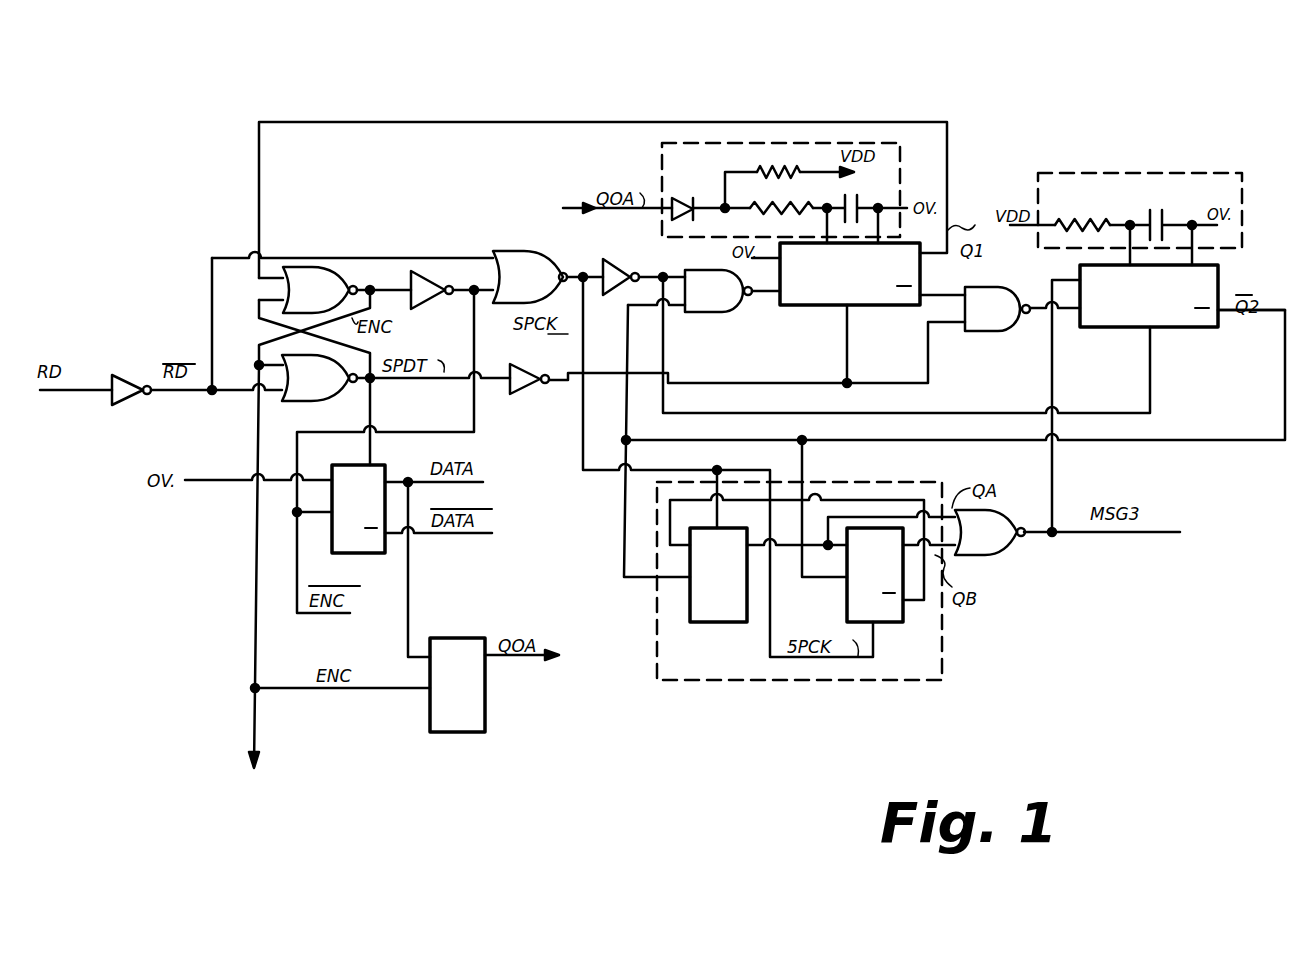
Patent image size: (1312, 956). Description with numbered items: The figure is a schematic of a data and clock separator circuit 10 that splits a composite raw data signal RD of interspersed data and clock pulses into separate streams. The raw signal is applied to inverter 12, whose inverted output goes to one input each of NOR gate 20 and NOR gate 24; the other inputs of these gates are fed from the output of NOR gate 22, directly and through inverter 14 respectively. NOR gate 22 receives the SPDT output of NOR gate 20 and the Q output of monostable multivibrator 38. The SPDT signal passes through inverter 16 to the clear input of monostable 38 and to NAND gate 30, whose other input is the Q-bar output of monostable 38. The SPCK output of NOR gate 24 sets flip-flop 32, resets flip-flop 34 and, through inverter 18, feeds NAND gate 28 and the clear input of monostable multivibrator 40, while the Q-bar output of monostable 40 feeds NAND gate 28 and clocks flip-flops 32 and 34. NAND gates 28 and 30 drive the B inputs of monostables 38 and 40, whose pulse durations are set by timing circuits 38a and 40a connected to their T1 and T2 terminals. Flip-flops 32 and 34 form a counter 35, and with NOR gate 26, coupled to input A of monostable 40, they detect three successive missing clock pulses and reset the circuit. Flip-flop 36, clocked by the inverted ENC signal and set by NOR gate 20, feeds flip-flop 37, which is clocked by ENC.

The data and clock separator circuit 10 is at (183, 128).
The inverter 12 is at (128, 378).
The inverter 14 is at (418, 280).
The inverter 16 is at (518, 386).
The inverter 18 is at (615, 297).
The NOR gate 20 is at (310, 382).
The NOR gate 22 is at (303, 280).
The NOR gate 24 is at (515, 262).
The NOR gate 26 is at (990, 535).
The NAND gate 28 is at (705, 300).
The NAND gate 30 is at (1002, 318).
The D-type flip-flop 32 is at (700, 612).
The D-type flip-flop 34 is at (920, 625).
The counter 35 is at (792, 682).
The D-type flip-flop 36 is at (348, 543).
The D-type flip-flop 37 is at (485, 707).
The retriggerable, resettable monostable multivibrator 38 is at (882, 312).
The timing circuit 38a is at (953, 97).
The retriggerable, resettable monostable multivibrator 40 is at (1188, 330).
The timing circuit 40a is at (1207, 137).